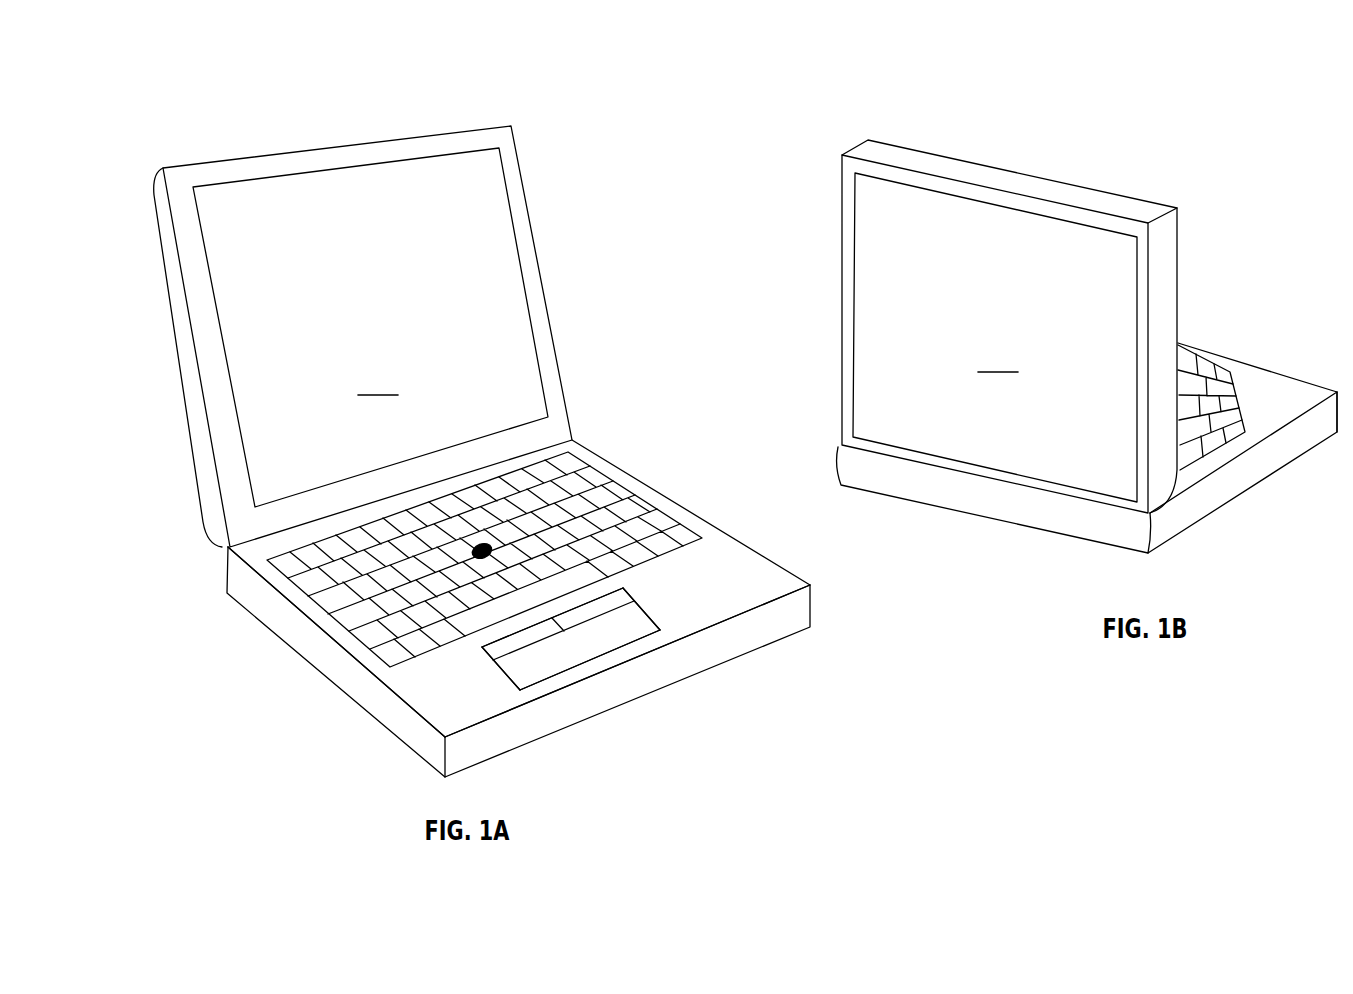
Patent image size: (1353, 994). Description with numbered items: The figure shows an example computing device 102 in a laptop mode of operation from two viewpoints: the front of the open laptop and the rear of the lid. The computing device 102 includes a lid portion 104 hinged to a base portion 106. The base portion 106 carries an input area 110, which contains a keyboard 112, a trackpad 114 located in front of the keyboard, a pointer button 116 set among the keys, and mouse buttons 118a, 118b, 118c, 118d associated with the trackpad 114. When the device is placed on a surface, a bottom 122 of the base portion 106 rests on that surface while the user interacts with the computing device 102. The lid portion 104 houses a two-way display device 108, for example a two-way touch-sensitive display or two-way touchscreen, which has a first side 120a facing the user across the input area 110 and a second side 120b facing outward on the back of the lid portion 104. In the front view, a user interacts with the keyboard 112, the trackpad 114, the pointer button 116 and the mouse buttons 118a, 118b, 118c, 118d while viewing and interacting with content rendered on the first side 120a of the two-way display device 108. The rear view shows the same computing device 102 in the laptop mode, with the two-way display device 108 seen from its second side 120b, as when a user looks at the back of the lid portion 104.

In FIG. 1A, the computing device 102 is at (310, 110).
In FIG. 1B, the computing device 102 is at (1028, 135).
In FIG. 1A, the lid portion 104 is at (512, 177).
In FIG. 1B, the lid portion 104 is at (845, 165).
In FIG. 1A, the base portion 106 is at (373, 703).
In FIG. 1B, the base portion 106 is at (1185, 517).
In FIG. 1A, the two-way display device 108 is at (525, 283).
In FIG. 1B, the two-way display device 108 is at (852, 305).
In FIG. 1A, the input area 110 is at (753, 595).
In FIG. 1B, the input area 110 is at (1248, 383).
In FIG. 1A, the keyboard 112 is at (623, 484).
In FIG. 1A, the trackpad 114 is at (573, 640).
In FIG. 1A, the pointer button 116 is at (488, 546).
In FIG. 1A, the mouse button 118a is at (520, 688).
In FIG. 1A, the mouse button 118b is at (490, 652).
In FIG. 1A, the mouse button 118c is at (630, 592).
In FIG. 1A, the mouse button 118d is at (662, 630).
In FIG. 1A, the first side 120a is at (369, 346).
In FIG. 1B, the second side 120b is at (1002, 333).
In FIG. 1A, the bottom 122 is at (297, 648).
In FIG. 1B, the bottom 122 is at (1278, 477).